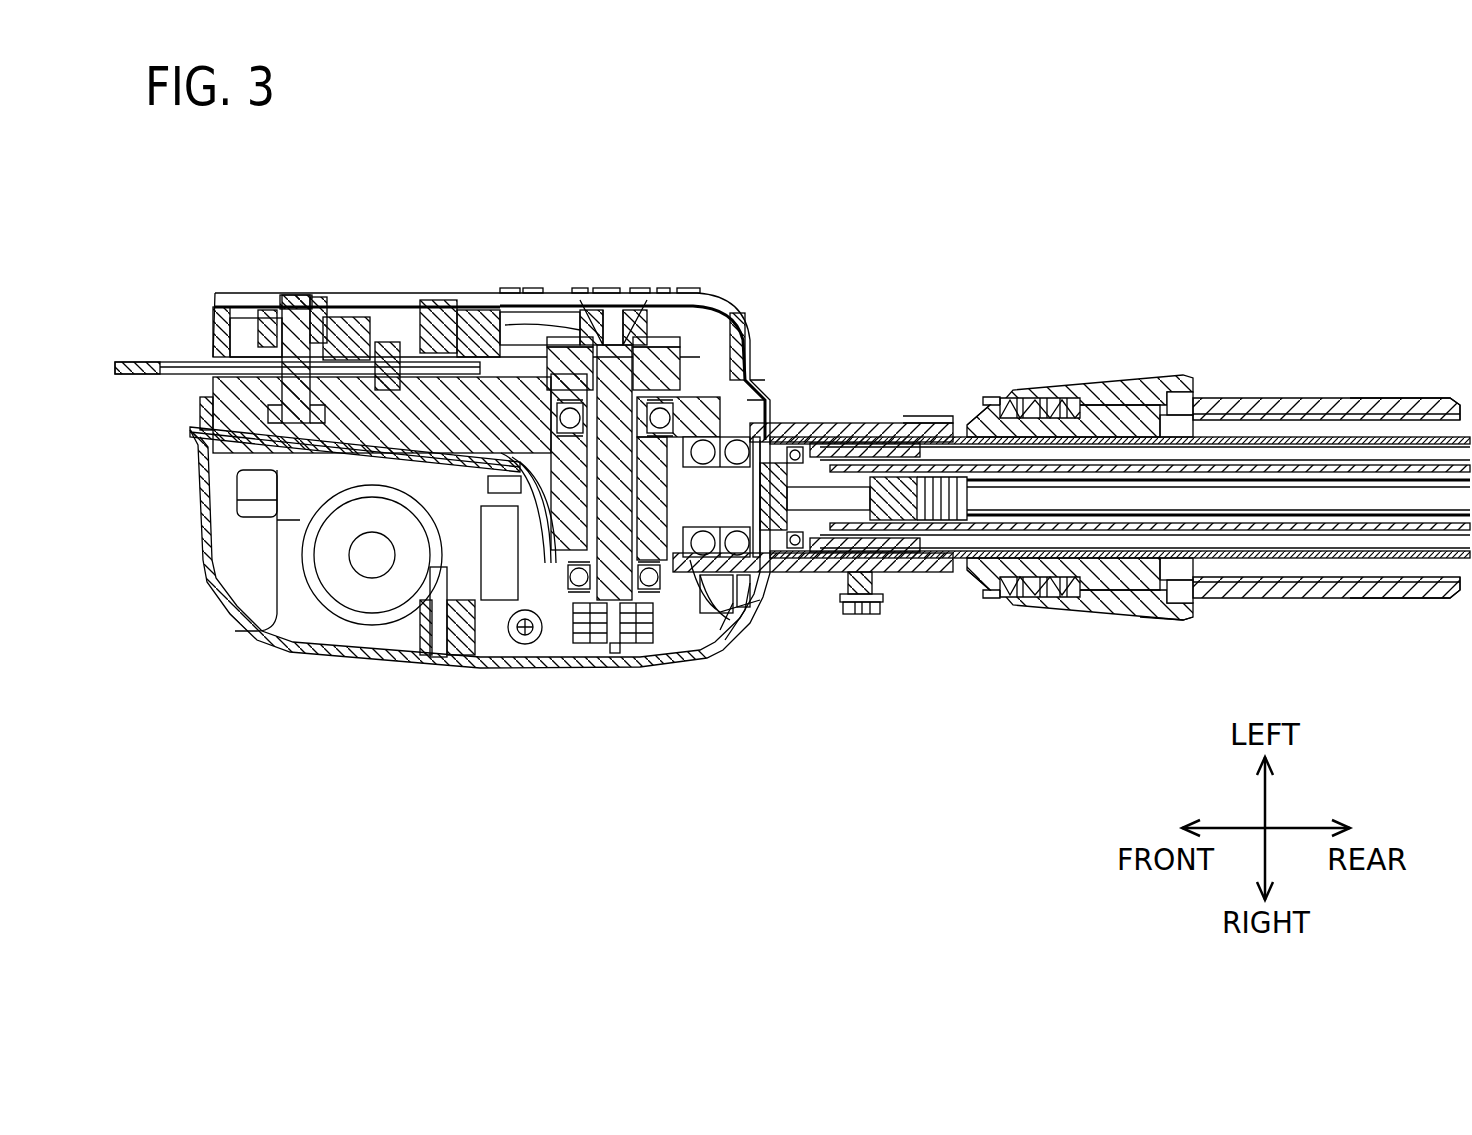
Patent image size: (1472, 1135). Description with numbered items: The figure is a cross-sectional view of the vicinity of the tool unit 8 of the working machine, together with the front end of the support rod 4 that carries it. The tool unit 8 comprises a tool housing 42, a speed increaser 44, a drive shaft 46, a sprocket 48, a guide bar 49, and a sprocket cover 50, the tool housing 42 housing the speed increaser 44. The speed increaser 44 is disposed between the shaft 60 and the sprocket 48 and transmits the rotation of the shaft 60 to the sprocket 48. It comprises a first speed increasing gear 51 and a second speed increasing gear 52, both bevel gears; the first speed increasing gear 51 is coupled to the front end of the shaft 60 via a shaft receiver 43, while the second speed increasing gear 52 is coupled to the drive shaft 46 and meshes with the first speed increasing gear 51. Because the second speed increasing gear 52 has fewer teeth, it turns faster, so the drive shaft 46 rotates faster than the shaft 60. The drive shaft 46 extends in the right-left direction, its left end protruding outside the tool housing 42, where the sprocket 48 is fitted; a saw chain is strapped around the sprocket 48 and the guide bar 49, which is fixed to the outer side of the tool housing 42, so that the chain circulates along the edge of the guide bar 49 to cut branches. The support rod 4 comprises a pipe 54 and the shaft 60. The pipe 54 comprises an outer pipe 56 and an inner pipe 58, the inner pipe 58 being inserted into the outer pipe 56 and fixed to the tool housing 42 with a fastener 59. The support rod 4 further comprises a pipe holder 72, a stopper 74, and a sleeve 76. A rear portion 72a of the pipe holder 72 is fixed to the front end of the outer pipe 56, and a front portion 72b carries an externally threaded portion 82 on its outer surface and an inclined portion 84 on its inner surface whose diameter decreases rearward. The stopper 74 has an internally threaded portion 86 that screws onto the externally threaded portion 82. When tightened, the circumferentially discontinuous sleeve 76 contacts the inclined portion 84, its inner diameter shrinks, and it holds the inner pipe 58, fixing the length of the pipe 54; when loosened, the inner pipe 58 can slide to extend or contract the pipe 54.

The tool unit 8 is at (318, 235).
The support rod 4 is at (1210, 650).
The guide bar 49 is at (118, 358).
The sprocket cover 50 is at (533, 293).
The sprocket 48 is at (670, 345).
The second speed increasing gear 52 is at (632, 392).
The drive shaft 46 is at (582, 645).
The speed increaser 44 is at (668, 600).
The tool housing 42 is at (543, 670).
The first speed increasing gear 51 is at (712, 630).
The shaft receiver 43 is at (787, 437).
The fastener 59 is at (875, 614).
The inner pipe 58 is at (1340, 558).
The outer pipe 56 is at (1292, 578).
The shaft 60 is at (962, 525).
The externally threaded portion 82 is at (1140, 392).
The inclined portion 84 is at (1080, 392).
The internally threaded portion 86 is at (1043, 412).
The sleeve 76 is at (1000, 390).
The stopper 74 is at (972, 408).
The front portion 72b is at (1163, 390).
The pipe holder 72 is at (1247, 408).
The rear portion 72a is at (1380, 403).
The pipe 54 is at (1423, 582).